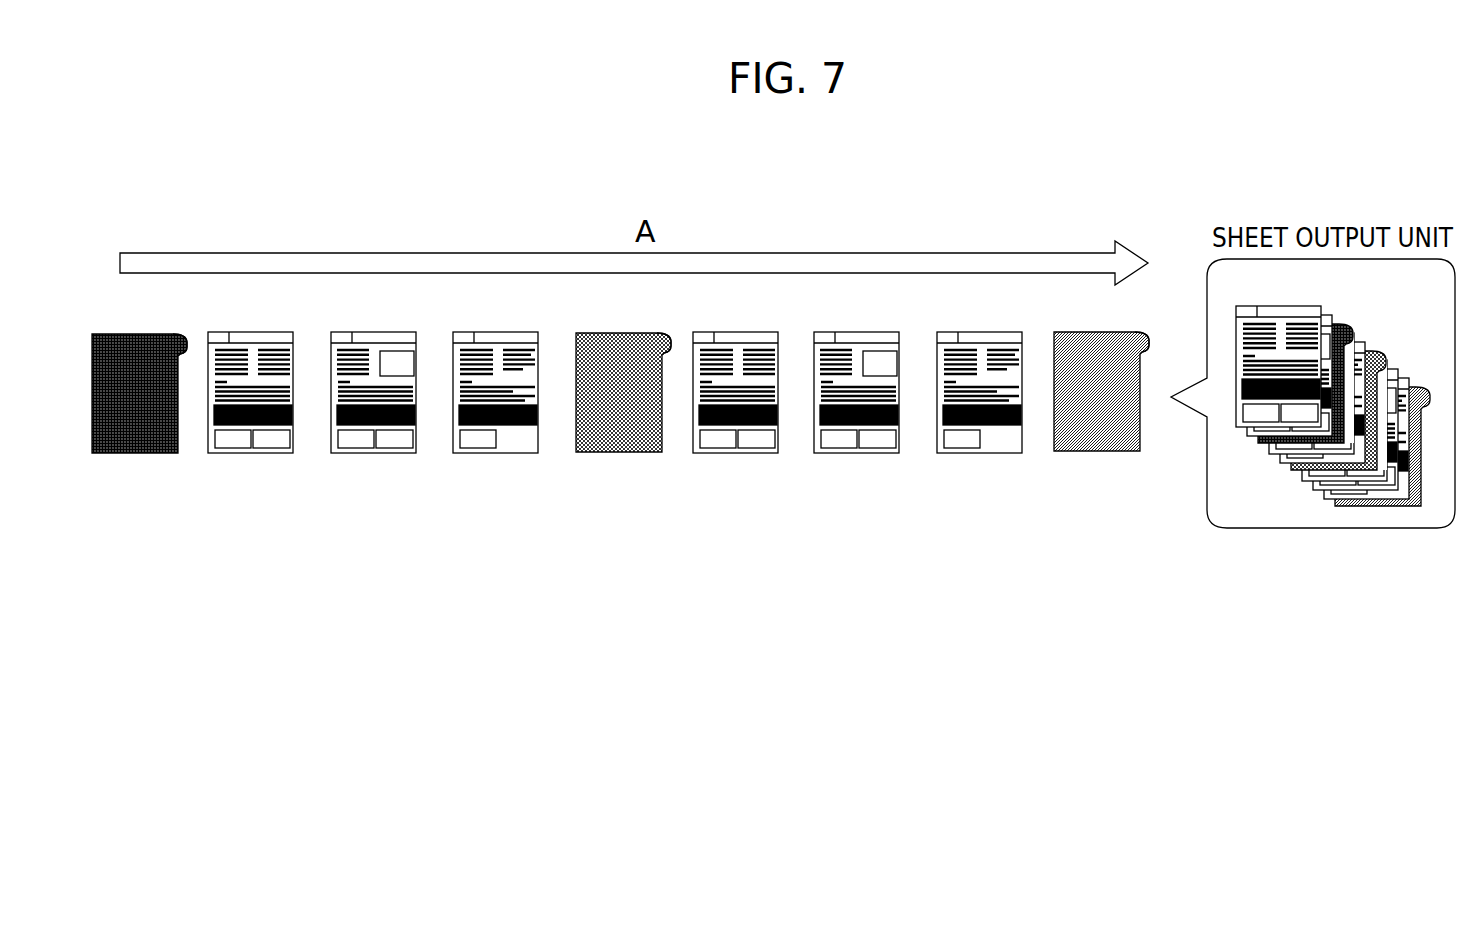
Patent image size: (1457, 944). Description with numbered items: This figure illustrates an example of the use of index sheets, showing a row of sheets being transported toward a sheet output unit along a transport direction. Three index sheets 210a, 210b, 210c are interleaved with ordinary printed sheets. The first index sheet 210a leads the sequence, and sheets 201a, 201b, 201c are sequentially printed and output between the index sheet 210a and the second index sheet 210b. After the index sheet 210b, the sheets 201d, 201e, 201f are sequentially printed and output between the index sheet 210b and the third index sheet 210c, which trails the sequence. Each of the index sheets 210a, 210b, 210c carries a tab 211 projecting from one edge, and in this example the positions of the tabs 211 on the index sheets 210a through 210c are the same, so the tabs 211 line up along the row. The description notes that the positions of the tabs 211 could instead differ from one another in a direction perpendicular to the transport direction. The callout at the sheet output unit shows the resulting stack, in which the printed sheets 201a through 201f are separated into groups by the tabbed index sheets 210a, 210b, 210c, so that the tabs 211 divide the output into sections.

The sheet 201a is at (978, 454).
The sheet 201b is at (858, 454).
The sheet 201c is at (738, 454).
The sheet 201d is at (497, 454).
The sheet 201e is at (377, 454).
The sheet 201f is at (257, 455).
The index sheet 210a is at (1098, 451).
The index sheet 210b is at (618, 454).
The index sheet 210c is at (135, 455).
The tab 211 is at (183, 331).